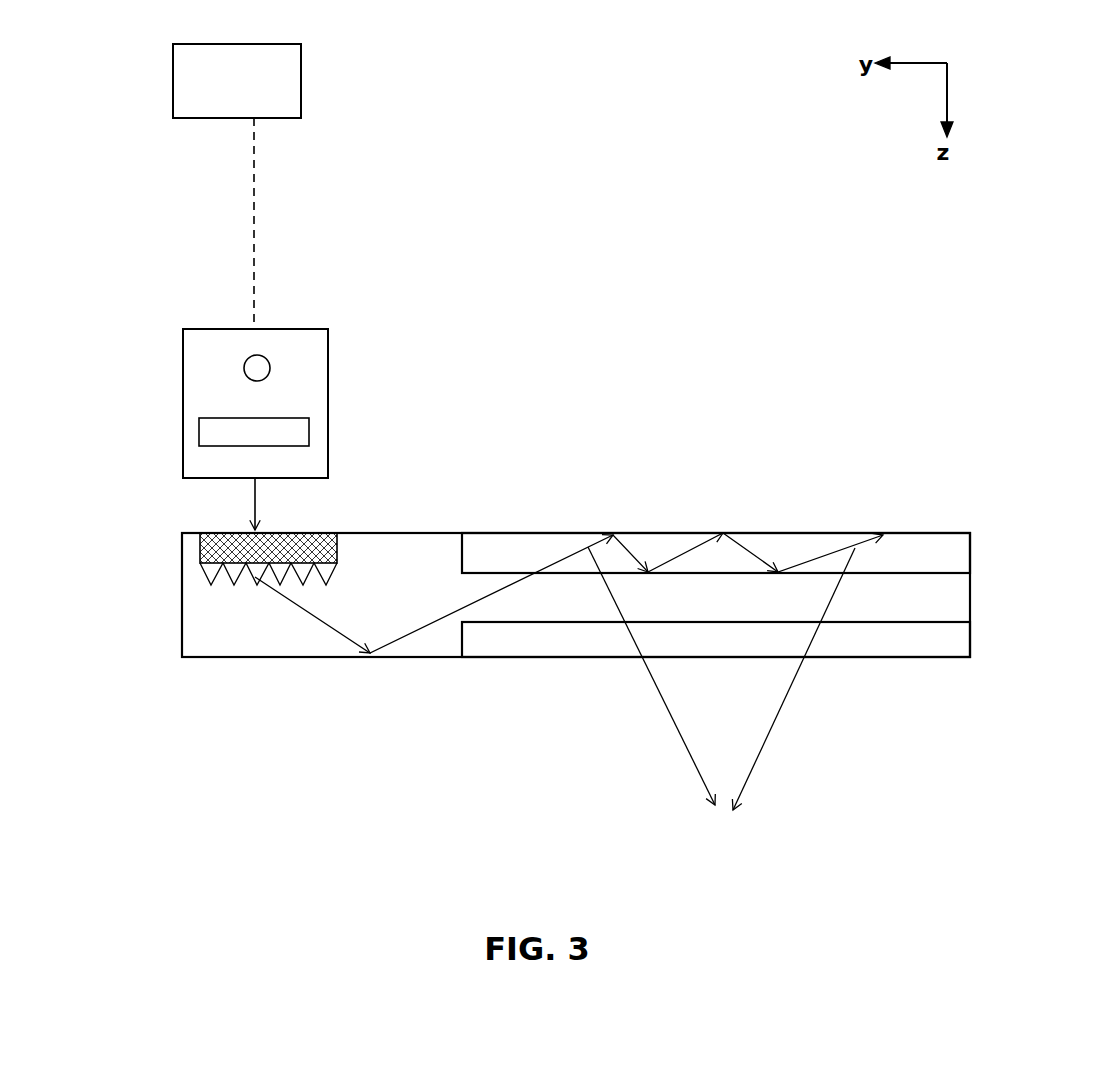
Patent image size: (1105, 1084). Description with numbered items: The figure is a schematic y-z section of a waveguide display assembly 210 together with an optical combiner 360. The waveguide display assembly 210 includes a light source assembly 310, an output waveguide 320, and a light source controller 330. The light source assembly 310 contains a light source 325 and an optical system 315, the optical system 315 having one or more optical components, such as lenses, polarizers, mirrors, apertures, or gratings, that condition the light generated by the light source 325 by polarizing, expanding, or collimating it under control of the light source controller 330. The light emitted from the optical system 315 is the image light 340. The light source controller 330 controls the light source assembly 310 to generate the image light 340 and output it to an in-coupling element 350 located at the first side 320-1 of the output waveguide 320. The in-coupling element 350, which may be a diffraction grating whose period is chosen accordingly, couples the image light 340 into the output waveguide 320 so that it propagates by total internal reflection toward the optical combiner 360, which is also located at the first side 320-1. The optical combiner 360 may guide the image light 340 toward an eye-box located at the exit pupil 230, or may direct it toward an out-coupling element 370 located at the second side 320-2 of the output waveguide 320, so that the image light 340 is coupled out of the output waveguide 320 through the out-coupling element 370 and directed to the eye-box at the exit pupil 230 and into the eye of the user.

The waveguide display assembly 210 is at (181, 217).
The exit pupil 230 is at (725, 848).
The light source assembly 310 is at (183, 337).
The optical system 315 is at (309, 432).
The output waveguide 320 is at (182, 633).
The first side of the output waveguide 320-1 is at (508, 533).
The second side of the output waveguide 320-2 is at (440, 657).
The light source 325 is at (268, 358).
The light source controller 330 is at (237, 186).
The image light 340 is at (257, 500).
The in-coupling element 350 is at (198, 547).
The optical combiner 360 is at (933, 562).
The out-coupling element 370 is at (933, 646).